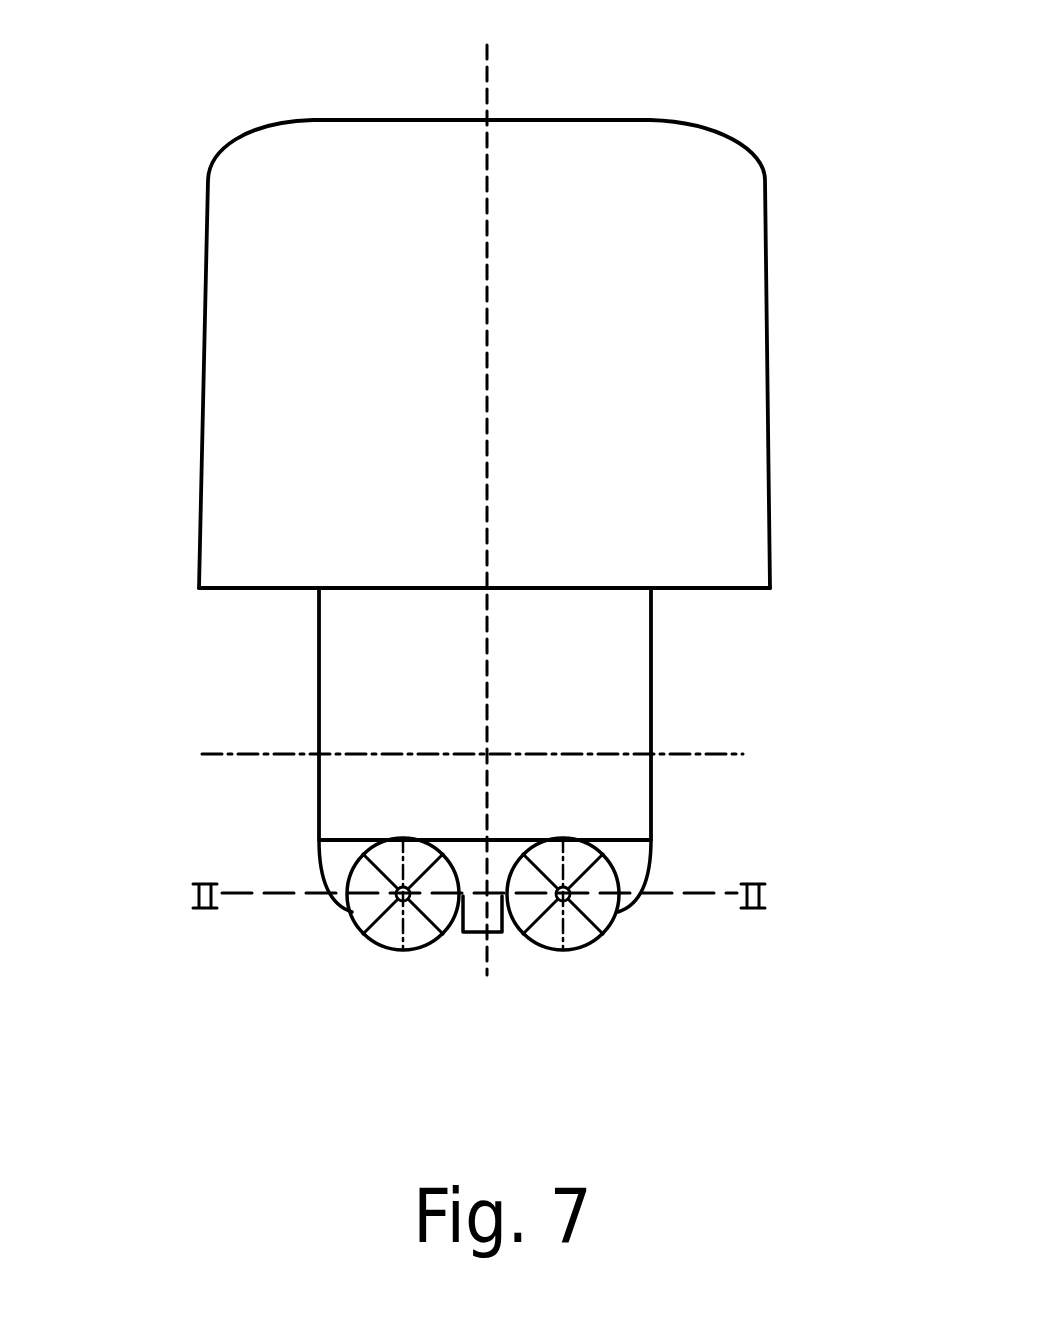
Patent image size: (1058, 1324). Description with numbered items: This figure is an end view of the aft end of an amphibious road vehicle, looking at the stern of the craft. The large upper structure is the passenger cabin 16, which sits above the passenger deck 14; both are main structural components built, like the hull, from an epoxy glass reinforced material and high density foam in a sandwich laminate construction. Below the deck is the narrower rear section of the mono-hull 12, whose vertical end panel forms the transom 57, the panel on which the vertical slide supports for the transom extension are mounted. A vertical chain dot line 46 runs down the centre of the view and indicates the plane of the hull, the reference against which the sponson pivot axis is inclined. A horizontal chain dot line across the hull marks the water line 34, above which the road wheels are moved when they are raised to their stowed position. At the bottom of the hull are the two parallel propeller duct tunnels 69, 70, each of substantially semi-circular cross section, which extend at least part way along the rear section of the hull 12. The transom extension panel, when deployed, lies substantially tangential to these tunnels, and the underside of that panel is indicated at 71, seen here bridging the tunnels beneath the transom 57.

The mono-hull 12 is at (652, 683).
The passenger deck 14 is at (223, 590).
The passenger cabin 16 is at (767, 262).
The water line 34 is at (765, 755).
The chain dot line 46 is at (487, 76).
The transom 57 is at (355, 722).
The propeller duct tunnels 69 is at (351, 872).
The wheel 70 is at (585, 945).
The underside of the panel 71 is at (633, 840).